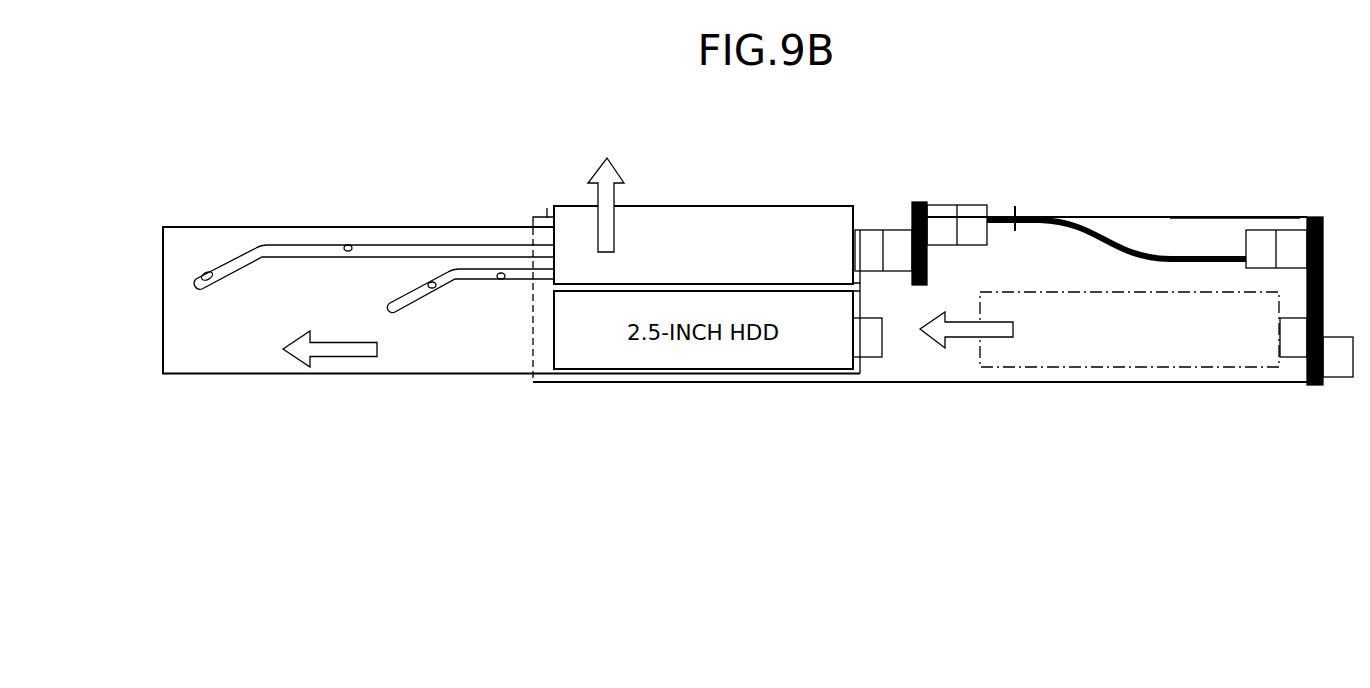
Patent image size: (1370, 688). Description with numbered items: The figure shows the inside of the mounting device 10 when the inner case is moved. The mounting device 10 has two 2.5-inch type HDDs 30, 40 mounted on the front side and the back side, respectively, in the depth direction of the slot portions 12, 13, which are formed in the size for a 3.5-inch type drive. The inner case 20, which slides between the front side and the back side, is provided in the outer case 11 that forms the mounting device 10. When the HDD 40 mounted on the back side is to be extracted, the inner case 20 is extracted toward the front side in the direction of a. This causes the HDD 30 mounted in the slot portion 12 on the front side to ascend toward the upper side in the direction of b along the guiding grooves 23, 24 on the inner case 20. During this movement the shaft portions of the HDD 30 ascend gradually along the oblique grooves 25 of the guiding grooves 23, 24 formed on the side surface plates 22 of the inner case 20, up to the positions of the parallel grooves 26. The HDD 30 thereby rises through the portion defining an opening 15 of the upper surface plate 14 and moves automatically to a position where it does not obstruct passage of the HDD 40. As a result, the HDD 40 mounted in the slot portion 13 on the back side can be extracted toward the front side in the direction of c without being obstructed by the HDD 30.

The mounting device 10 is at (1262, 203).
The outer case 11 is at (1192, 217).
The slot portion 12 is at (1226, 233).
The slot portion 13 is at (1100, 372).
The upper surface plate 14 is at (1128, 217).
The opening 15 is at (1017, 208).
The inner case 20 is at (268, 222).
The side surface plate 22 is at (200, 226).
The guiding groove 23 is at (381, 236).
The guiding groove 24 is at (454, 258).
The oblique groove 25 is at (201, 279).
The parallel groove 26 is at (348, 245).
The 2.5-inch type HDD 30 is at (658, 206).
The 2.5-inch type HDD 40 is at (997, 368).
The extraction direction of inner case a is at (355, 359).
The ascending direction of front HDD b is at (596, 168).
The extraction direction of back HDD c is at (1015, 330).